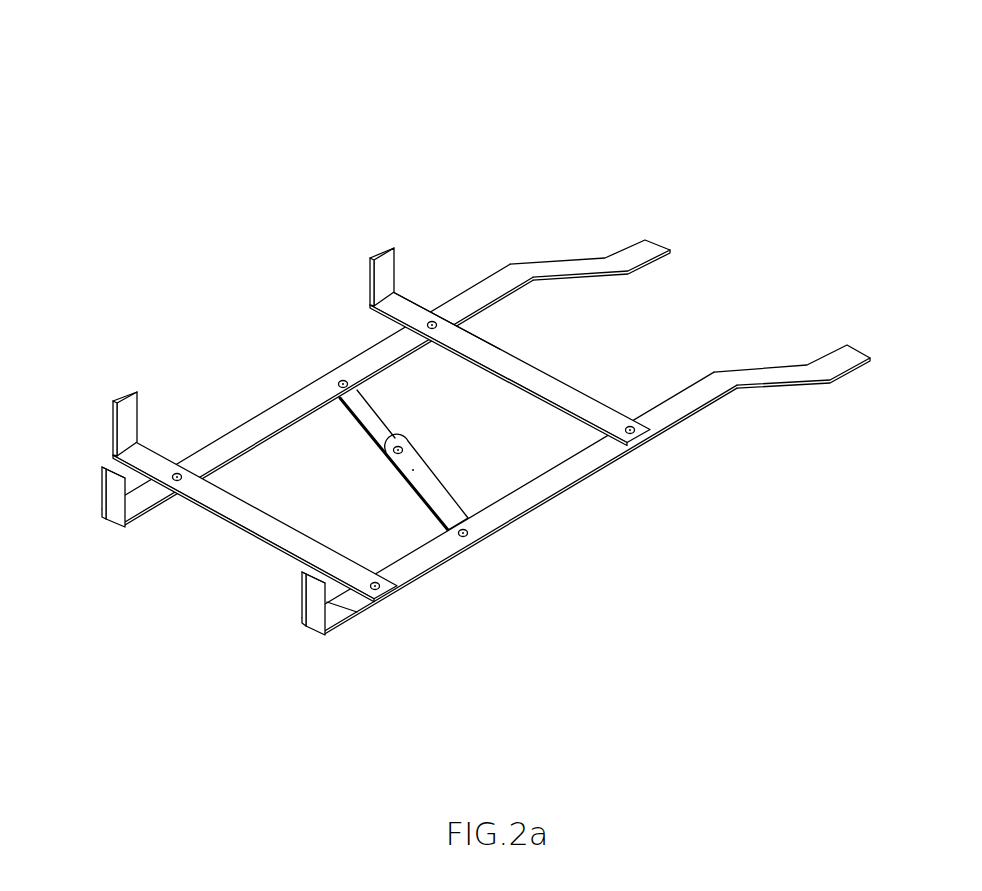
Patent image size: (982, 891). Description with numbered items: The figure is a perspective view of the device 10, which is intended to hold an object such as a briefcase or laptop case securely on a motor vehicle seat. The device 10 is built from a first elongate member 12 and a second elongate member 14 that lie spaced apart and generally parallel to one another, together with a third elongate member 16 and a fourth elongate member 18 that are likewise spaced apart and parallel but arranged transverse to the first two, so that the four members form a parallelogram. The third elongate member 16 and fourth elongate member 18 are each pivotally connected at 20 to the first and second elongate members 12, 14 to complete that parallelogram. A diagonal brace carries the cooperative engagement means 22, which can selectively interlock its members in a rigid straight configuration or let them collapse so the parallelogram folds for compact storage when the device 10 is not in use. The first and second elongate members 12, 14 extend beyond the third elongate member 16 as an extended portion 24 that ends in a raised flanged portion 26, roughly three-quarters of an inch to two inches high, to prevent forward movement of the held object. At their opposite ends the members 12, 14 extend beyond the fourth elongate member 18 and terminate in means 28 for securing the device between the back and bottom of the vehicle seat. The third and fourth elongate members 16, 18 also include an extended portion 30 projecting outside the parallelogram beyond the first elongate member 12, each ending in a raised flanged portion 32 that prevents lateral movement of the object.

The device 10 is at (545, 118).
The first elongate member 12 is at (270, 425).
The second elongate member 14 is at (573, 467).
The third elongate member 16 is at (243, 446).
The fourth elongate member 18 is at (513, 316).
The pivotal connection 20 is at (180, 474).
The cooperative engagement means 22 is at (395, 408).
The extended portion 24 is at (143, 507).
The raised flanged portion 26 is at (115, 503).
The means for securing the device 28 is at (763, 350).
The extended portion 30 is at (408, 308).
The raised flanged portion 32 is at (370, 258).